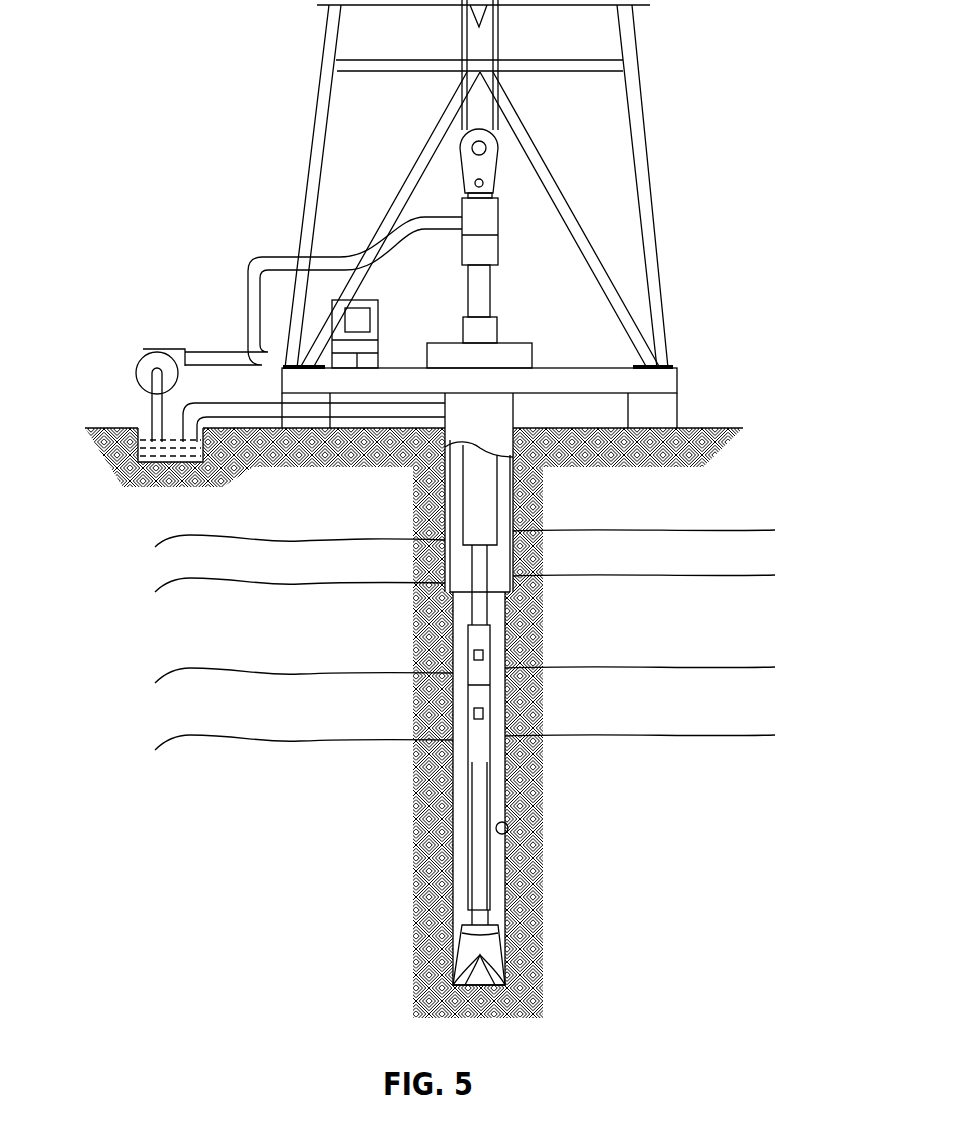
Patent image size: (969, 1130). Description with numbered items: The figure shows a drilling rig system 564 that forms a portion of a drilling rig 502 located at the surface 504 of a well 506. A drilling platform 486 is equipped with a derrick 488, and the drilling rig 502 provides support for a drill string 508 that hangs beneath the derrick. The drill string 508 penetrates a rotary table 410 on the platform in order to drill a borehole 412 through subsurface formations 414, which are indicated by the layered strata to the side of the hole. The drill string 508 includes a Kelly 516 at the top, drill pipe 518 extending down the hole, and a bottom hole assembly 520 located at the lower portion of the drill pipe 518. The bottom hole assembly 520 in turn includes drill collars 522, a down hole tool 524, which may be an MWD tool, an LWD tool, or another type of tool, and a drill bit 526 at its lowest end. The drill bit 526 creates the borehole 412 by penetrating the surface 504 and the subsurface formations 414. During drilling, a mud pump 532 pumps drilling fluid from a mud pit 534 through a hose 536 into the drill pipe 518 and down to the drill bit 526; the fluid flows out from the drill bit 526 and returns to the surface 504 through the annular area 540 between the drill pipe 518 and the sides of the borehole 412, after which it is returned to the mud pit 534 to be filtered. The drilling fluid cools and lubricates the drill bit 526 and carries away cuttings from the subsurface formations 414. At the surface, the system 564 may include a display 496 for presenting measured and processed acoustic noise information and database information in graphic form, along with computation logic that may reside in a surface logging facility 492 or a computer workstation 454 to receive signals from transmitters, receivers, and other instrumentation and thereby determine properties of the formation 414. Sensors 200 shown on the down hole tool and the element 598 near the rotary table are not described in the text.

The drilling rig system 564 is at (206, 71).
The derrick 488 is at (642, 103).
The drilling rig 502 is at (657, 175).
The Kelly 516 is at (491, 273).
The surface logging facility 492 is at (366, 290).
The display 496 is at (370, 320).
The rotary table 410 is at (460, 345).
The blowout preventer 598 is at (497, 335).
The computer workstation 454 is at (333, 307).
The hose 536 is at (247, 307).
The mud pump 532 is at (133, 372).
The mud pit 534 is at (168, 458).
The drilling platform 486 is at (677, 382).
The surface 504 is at (683, 428).
The well 506 is at (519, 419).
The drill collars 522 is at (497, 527).
The drill pipe 518 is at (478, 583).
The annular area 540 is at (511, 642).
The sensor 200 is at (483, 655).
The drill string 508 is at (494, 764).
The borehole 412 is at (508, 832).
The down hole tool 524 is at (537, 888).
The drill bit 526 is at (487, 960).
The bottom hole assembly 520 is at (388, 597).
The subsurface formations 414 is at (120, 540).